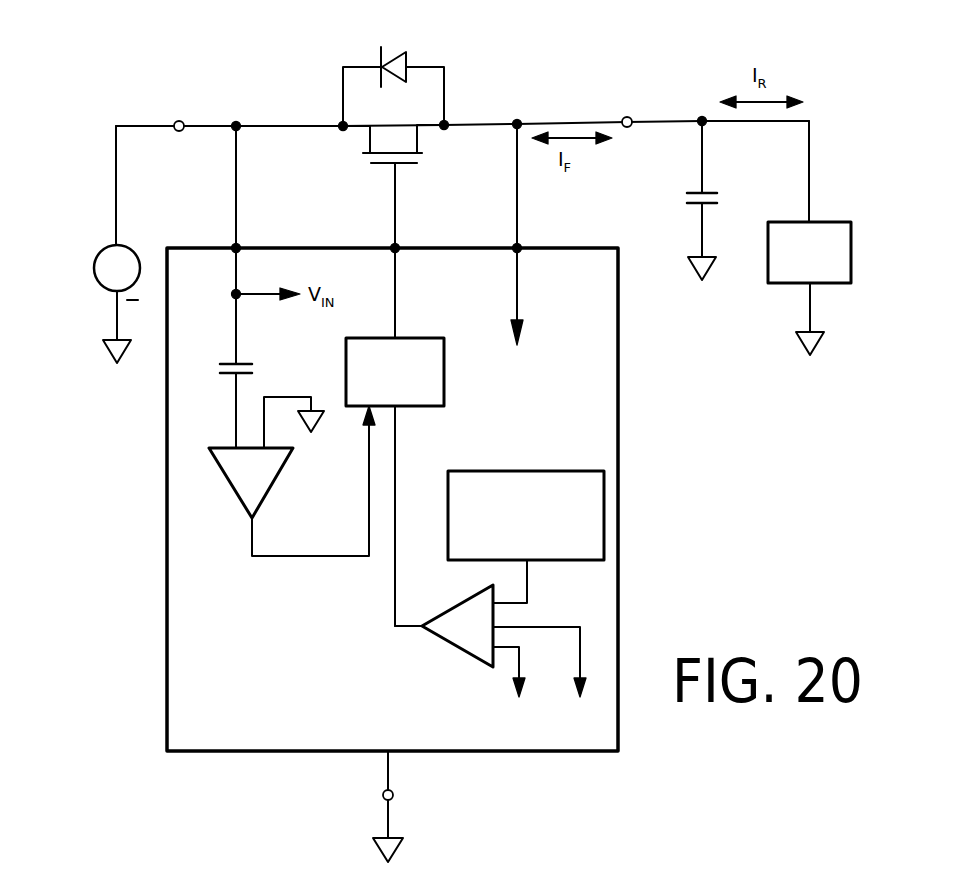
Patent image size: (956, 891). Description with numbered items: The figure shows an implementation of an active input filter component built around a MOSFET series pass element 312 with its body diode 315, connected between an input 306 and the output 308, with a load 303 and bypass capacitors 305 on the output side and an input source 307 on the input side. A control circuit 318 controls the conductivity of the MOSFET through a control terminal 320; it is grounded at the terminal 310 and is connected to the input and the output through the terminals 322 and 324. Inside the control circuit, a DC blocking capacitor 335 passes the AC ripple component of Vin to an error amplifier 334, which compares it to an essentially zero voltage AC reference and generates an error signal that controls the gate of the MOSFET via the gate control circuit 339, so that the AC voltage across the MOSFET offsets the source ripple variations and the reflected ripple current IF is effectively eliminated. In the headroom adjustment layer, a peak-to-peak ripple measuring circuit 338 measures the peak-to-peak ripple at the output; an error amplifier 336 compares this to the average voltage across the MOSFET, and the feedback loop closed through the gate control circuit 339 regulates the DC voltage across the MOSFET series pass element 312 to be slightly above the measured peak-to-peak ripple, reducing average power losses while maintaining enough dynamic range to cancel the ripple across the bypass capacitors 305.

The load 303 is at (790, 285).
The bypass capacitors 305 is at (706, 193).
The input terminal 306 is at (183, 131).
The input voltage source 307 is at (108, 290).
The input 308 is at (630, 128).
The terminal 310 is at (383, 795).
The MOSFET series pass element 312 is at (405, 165).
The body diode 315 is at (400, 55).
The control circuit 318 is at (620, 540).
The control terminal 320 is at (394, 246).
The terminal 322 is at (236, 246).
The terminal 324 is at (518, 246).
The error amplifier 334 is at (227, 482).
The DC blocking capacitor 335 is at (242, 362).
The error amplifier 336 is at (455, 655).
The peak-to-peak ripple measuring circuit 338 is at (528, 468).
The gate control circuit 339 is at (413, 336).